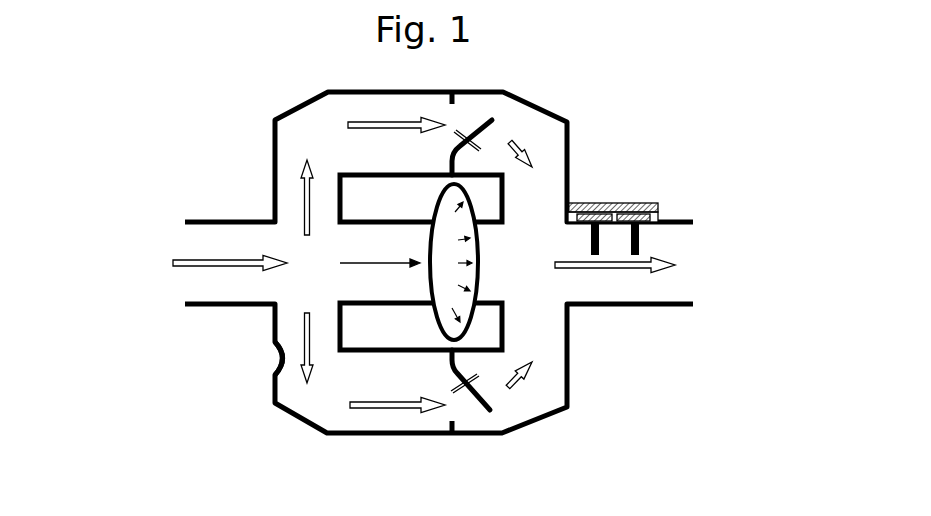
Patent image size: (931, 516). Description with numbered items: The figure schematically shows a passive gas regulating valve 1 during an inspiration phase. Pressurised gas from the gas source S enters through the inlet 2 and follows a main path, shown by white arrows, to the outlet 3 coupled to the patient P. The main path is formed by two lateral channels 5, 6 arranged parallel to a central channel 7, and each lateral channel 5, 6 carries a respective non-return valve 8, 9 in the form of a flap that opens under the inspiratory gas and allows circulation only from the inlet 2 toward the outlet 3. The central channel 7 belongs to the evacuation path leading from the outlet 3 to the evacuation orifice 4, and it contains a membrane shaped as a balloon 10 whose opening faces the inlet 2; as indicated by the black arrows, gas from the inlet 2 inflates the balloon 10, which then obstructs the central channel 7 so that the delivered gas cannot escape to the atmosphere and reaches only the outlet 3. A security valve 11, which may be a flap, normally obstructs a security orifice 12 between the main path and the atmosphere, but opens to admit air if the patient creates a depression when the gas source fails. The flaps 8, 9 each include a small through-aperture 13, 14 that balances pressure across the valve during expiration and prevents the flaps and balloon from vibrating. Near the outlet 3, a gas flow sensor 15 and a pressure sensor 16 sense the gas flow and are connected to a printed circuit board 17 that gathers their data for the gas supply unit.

The passive gas regulating valve 1 is at (152, 118).
The inlet 2 is at (200, 282).
The outlet 3 is at (677, 283).
The evacuation orifice 4 is at (370, 192).
The lateral channel 5 is at (352, 147).
The lateral channel 6 is at (332, 397).
The central channel 7 is at (490, 258).
The non-return valve 8 is at (478, 122).
The non-return valve 9 is at (476, 395).
The membrane 10 is at (478, 285).
The security valve 11 is at (273, 345).
The security orifice 12 is at (268, 363).
The through-aperture 13 is at (482, 144).
The through-aperture 14 is at (478, 378).
The gas flow sensor 15 is at (600, 245).
The pressure sensor 16 is at (640, 243).
The printed circuit board 17 is at (603, 203).